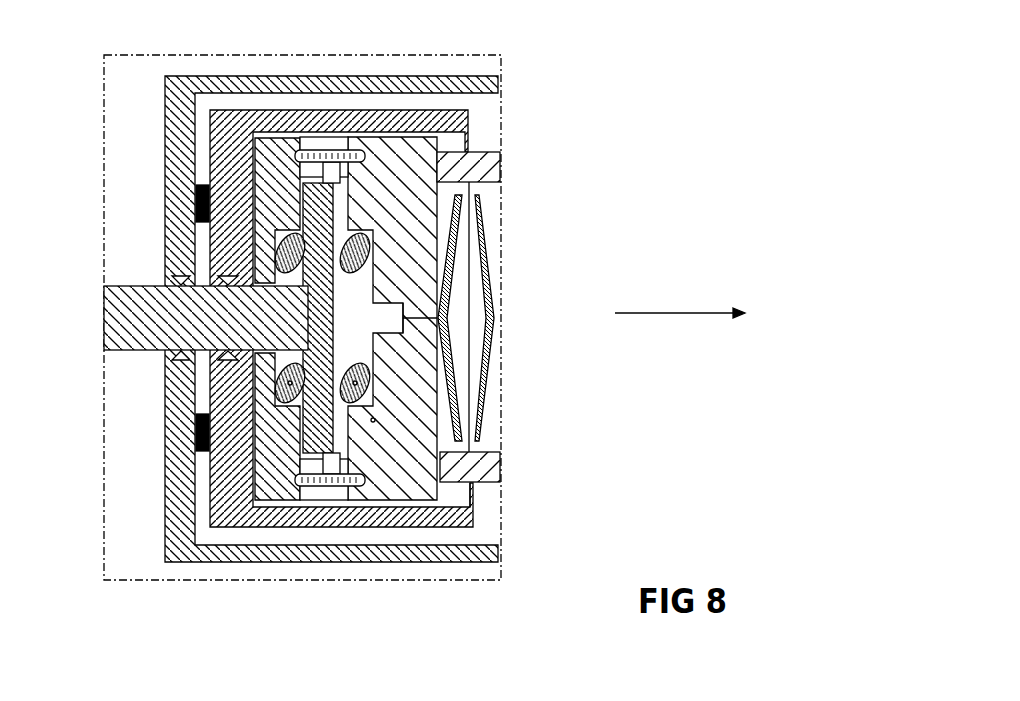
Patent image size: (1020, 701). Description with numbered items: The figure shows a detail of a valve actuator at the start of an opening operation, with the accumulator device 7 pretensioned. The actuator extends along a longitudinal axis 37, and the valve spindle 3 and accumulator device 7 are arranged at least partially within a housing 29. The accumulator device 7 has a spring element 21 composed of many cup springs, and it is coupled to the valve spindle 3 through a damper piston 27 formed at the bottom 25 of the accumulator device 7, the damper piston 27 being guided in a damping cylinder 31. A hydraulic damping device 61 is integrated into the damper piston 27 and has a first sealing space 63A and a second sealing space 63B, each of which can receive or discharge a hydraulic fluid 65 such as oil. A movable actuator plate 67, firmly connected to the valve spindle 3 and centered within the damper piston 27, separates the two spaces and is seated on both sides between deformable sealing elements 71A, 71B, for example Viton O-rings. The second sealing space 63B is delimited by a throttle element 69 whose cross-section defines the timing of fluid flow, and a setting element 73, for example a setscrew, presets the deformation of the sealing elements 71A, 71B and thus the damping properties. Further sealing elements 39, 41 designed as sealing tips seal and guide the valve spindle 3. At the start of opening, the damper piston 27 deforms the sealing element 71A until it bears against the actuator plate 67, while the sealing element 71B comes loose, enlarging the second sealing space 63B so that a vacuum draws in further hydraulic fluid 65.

The valve spindle 3 is at (104, 346).
The accumulator device 7 is at (492, 472).
The spring element 21 is at (481, 385).
The bottom 25 is at (473, 487).
The damper piston 27 is at (390, 147).
The housing 29 is at (218, 77).
The damping cylinder 31 is at (430, 112).
The longitudinal axis 37 is at (652, 313).
The sealing element 39 is at (296, 285).
The sealing tip 41 is at (300, 300).
The hydraulic damping device 61 is at (328, 150).
The first sealing space 63A is at (186, 383).
The second sealing space 63B is at (408, 345).
The hydraulic fluid 65 is at (288, 300).
The movable actuator plate 67 is at (362, 470).
The throttle element 69 is at (406, 320).
The sealing element 71A is at (284, 405).
The sealing element 71B is at (375, 440).
The setting element 73 is at (328, 487).